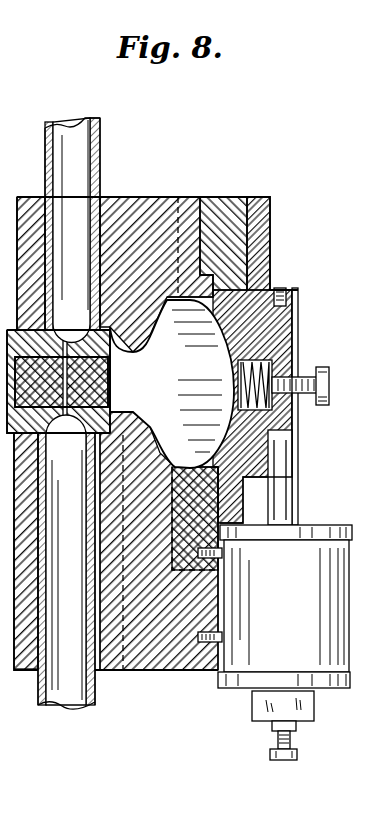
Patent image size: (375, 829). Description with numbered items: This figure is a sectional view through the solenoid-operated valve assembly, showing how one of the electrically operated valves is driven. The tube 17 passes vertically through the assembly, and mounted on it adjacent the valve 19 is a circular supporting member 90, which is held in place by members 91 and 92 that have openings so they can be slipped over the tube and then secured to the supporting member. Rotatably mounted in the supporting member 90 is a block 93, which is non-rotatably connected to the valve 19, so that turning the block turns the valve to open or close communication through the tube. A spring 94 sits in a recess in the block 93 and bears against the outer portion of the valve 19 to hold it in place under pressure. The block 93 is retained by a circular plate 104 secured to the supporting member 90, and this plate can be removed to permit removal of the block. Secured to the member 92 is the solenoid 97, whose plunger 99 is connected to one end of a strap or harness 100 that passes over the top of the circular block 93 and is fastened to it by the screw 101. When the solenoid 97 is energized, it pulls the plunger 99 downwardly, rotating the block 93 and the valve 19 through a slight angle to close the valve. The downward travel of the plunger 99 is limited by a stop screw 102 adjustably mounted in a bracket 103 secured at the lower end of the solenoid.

The tube 17 is at (100, 162).
The valve 19 is at (148, 399).
The circular supporting member 90 is at (222, 207).
The securing member 91 is at (165, 215).
The securing member 92 is at (155, 642).
The block 93 is at (255, 330).
The spring 94 is at (265, 360).
The solenoid 97 is at (282, 617).
The plunger 99 is at (290, 505).
The strap 100 is at (293, 412).
The screw 101 is at (290, 288).
The stop screw 102 is at (278, 746).
The bracket 103 is at (258, 700).
The circular plate 104 is at (258, 228).